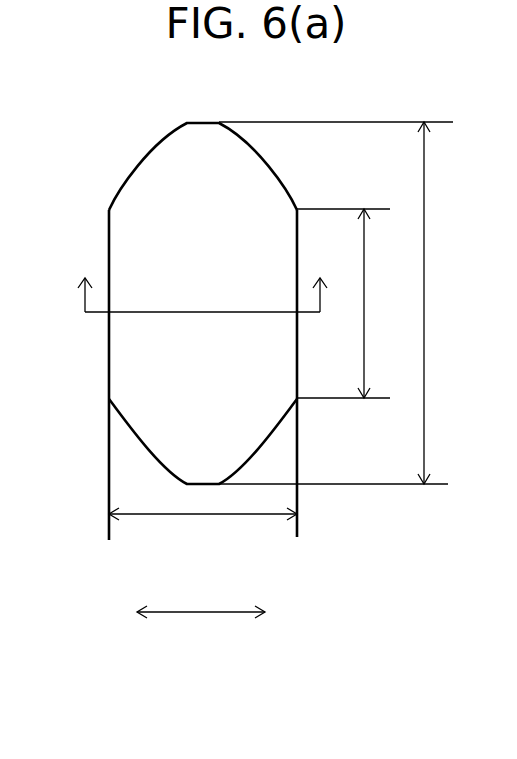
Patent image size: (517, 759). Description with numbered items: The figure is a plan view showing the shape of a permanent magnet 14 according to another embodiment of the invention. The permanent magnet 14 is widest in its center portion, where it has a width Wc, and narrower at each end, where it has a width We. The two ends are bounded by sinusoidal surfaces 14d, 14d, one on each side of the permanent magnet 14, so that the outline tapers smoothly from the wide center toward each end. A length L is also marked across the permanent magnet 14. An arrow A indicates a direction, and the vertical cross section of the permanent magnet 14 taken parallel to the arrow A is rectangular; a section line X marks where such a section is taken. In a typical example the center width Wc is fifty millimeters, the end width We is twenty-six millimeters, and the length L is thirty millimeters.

The permanent magnet 14 is at (127, 358).
The sinusoidal surface 14d is at (257, 153).
The length L is at (203, 535).
The end width We is at (353, 303).
The center width Wc is at (350, 303).
The arrow A is at (201, 631).
The section line X- X is at (204, 275).